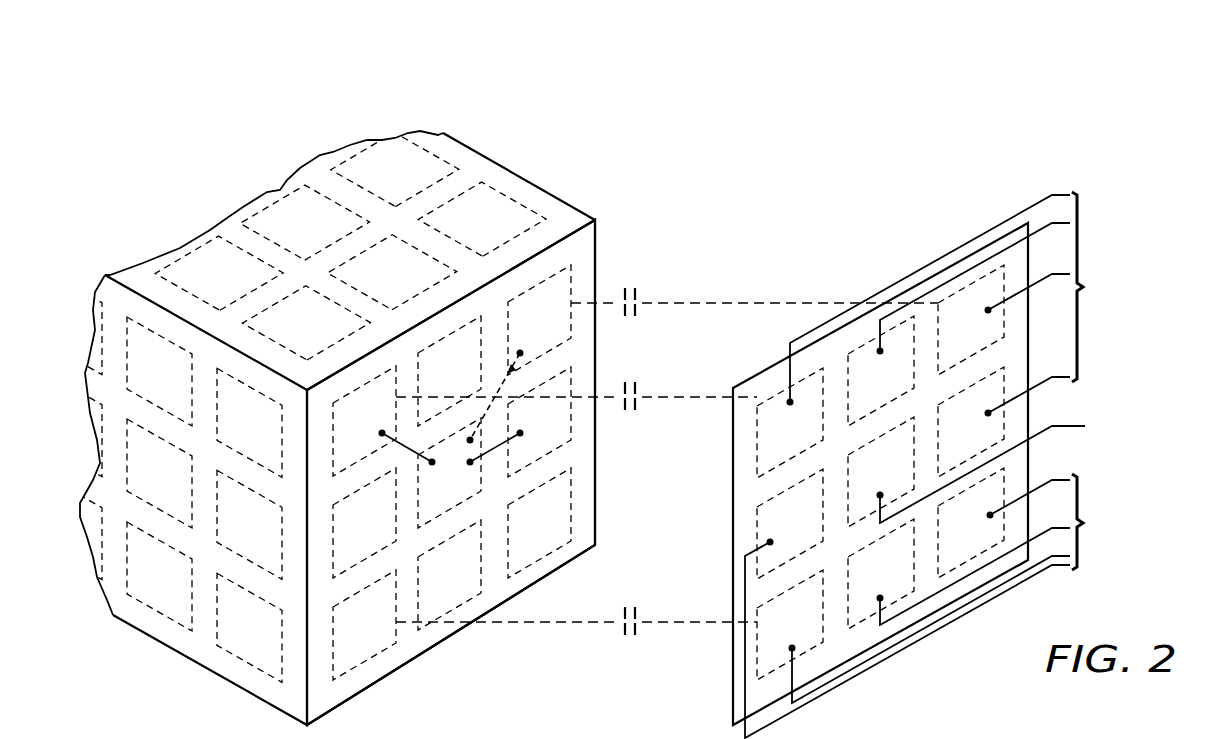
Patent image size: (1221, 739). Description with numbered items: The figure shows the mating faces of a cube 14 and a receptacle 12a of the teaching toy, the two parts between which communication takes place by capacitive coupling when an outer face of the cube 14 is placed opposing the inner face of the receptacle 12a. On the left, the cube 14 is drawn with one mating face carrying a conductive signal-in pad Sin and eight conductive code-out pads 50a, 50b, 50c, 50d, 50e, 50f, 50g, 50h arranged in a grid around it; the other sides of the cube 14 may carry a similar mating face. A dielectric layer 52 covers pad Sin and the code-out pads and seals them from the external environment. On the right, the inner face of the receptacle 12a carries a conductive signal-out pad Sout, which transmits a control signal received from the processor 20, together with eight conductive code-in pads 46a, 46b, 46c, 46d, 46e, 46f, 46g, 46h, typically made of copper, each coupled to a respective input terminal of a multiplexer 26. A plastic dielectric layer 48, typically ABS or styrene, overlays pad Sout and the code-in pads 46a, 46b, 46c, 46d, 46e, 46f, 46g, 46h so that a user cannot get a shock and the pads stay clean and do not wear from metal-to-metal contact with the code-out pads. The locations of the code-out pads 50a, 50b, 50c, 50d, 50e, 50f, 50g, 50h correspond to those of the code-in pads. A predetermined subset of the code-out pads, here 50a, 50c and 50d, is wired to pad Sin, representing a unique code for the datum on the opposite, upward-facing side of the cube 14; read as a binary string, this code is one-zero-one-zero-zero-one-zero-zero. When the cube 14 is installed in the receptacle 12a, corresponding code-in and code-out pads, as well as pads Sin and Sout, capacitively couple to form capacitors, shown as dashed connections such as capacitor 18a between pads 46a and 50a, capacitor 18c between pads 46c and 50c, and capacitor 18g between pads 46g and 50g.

The cube 14 is at (225, 158).
The receptacle 12a is at (1104, 233).
The capacitor 18a is at (640, 391).
The capacitor 18c is at (640, 297).
The capacitor 18g is at (640, 616).
The dielectric layer 48 is at (764, 385).
The dielectric layer 52 is at (406, 655).
The code-out pad 50a is at (347, 428).
The code-out pad 50b is at (434, 387).
The code-out pad 50c is at (523, 333).
The code-out pad 50d is at (523, 428).
The code-out pad 50e is at (523, 537).
The code-out pad 50f is at (434, 585).
The code-out pad 50g is at (347, 642).
The code-out pad 50h is at (347, 537).
The code-in pad 46a is at (773, 430).
The code-in pad 46b is at (863, 387).
The code-in pad 46c is at (953, 338).
The code-in pad 46d is at (953, 437).
The code-in pad 46e is at (953, 542).
The code-in pad 46f is at (863, 587).
The code-in pad 46g is at (773, 645).
The code-in pad 46h is at (773, 530).
The multiplexer 26 is at (1138, 381).
The processor 20 is at (1145, 429).